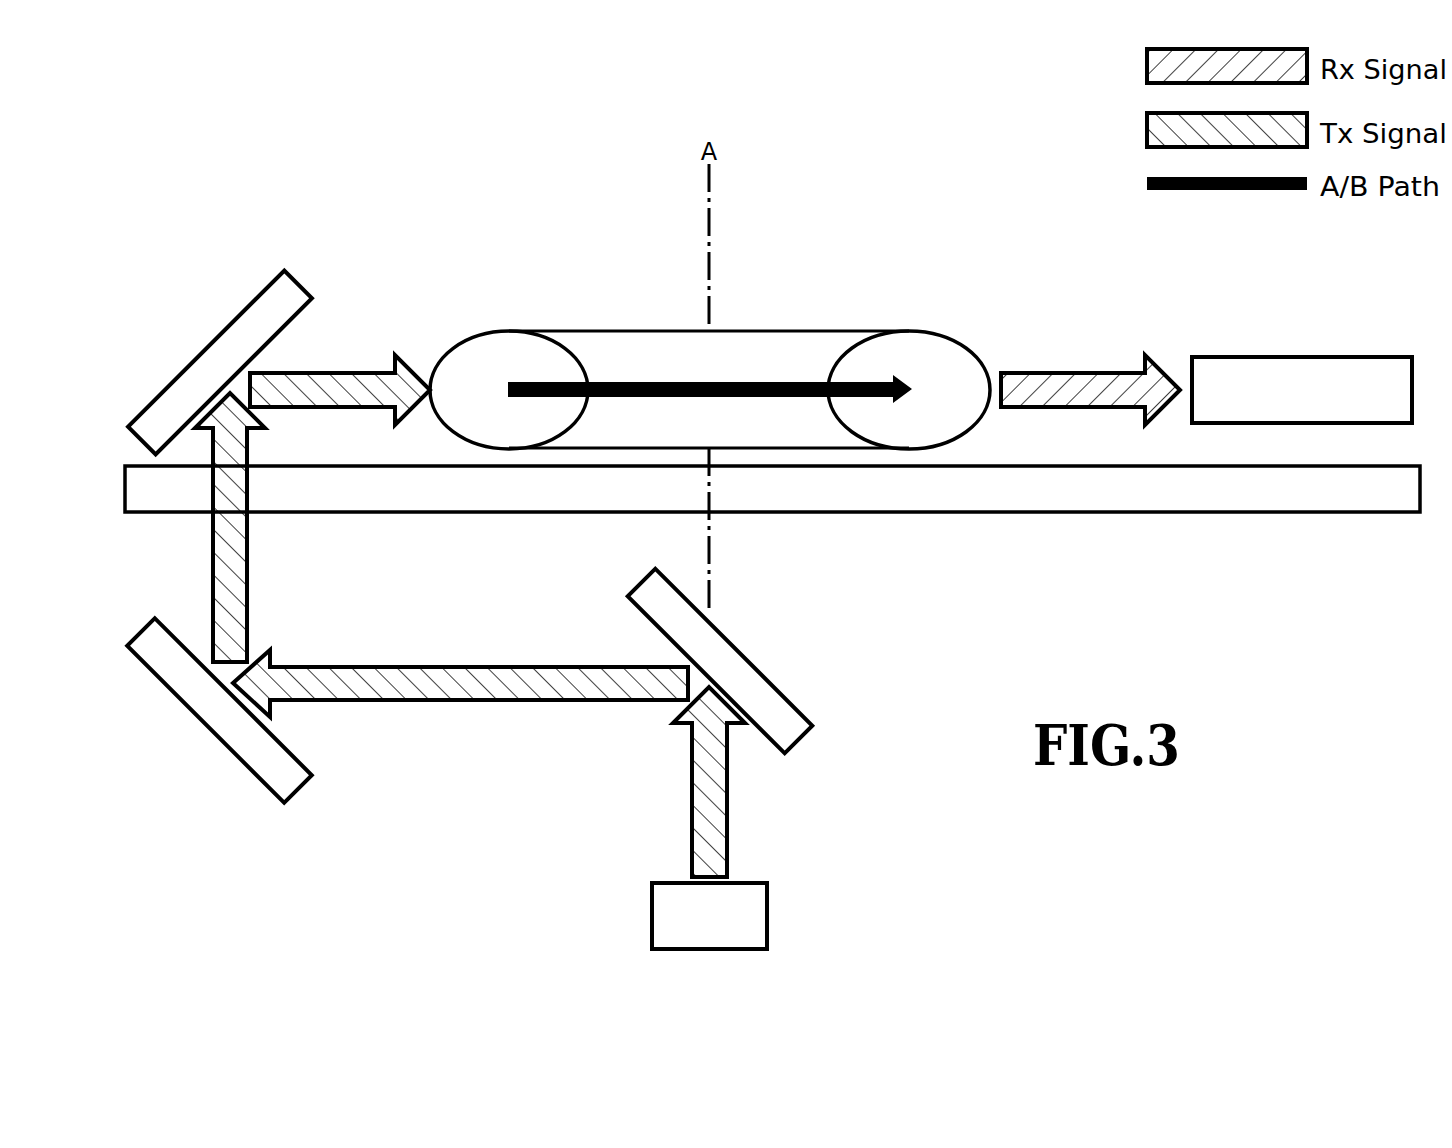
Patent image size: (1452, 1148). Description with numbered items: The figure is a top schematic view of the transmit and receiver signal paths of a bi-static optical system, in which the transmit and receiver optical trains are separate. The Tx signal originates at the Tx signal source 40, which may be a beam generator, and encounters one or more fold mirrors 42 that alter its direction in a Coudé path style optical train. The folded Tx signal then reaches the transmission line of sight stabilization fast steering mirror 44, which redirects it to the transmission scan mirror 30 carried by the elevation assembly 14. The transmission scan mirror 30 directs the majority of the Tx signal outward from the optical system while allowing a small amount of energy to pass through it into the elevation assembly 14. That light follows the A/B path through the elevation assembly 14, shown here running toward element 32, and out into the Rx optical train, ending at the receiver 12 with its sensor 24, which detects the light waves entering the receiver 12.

The receiver 12 is at (1302, 390).
The sensor 24 is at (1302, 390).
The elevation assembly 14 is at (786, 337).
The transmission scan mirror 30 is at (484, 353).
The point B 32 is at (933, 352).
The Tx signal source 40 is at (709, 916).
The fold mirror 42 is at (218, 723).
The transmission line of sight stabilization fast steering mirror 44 is at (218, 347).